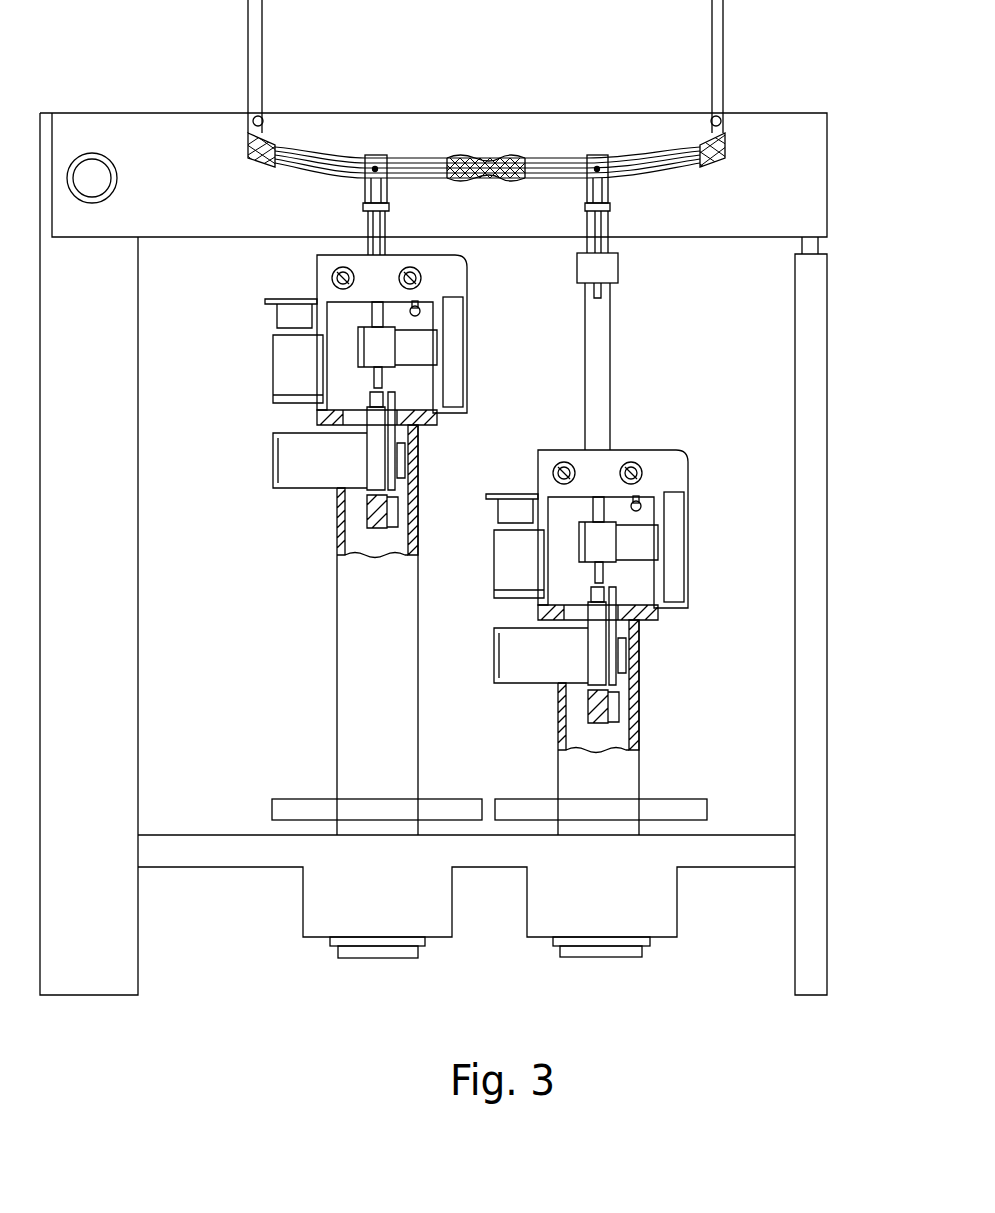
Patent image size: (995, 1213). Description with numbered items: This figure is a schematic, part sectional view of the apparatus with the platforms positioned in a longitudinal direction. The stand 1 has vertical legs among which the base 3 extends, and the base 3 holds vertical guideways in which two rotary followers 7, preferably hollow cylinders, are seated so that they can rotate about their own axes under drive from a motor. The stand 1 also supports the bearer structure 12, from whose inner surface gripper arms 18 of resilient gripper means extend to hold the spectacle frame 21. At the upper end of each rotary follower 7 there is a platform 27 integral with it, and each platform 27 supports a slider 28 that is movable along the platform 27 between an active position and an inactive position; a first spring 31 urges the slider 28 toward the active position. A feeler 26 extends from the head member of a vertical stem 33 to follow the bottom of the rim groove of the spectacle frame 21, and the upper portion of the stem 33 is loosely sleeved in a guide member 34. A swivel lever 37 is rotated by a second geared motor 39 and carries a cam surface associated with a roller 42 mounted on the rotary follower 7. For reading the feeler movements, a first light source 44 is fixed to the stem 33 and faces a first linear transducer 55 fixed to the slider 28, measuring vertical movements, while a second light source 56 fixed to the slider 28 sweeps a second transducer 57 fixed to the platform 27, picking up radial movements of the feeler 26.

The stand 1 is at (815, 875).
The base 3 is at (206, 848).
The rotary follower 7 is at (345, 603).
The bearer structure 12 is at (812, 181).
The gripper arm 18 is at (384, 154).
The spectacle frame 21 is at (250, 137).
The feeler 26 is at (376, 167).
The platform 27 is at (413, 422).
The slider 28 is at (330, 262).
The first spring 31 is at (421, 311).
The vertical stem 33 is at (376, 316).
The guide member 34 is at (366, 225).
The swivel lever 37 is at (412, 453).
The second geared motor 39 is at (298, 478).
The roller 42 is at (400, 507).
The first light source 44 is at (424, 347).
The first linear transducer 55 is at (453, 373).
The second light source 56 is at (283, 372).
The second transducer 57 is at (282, 318).